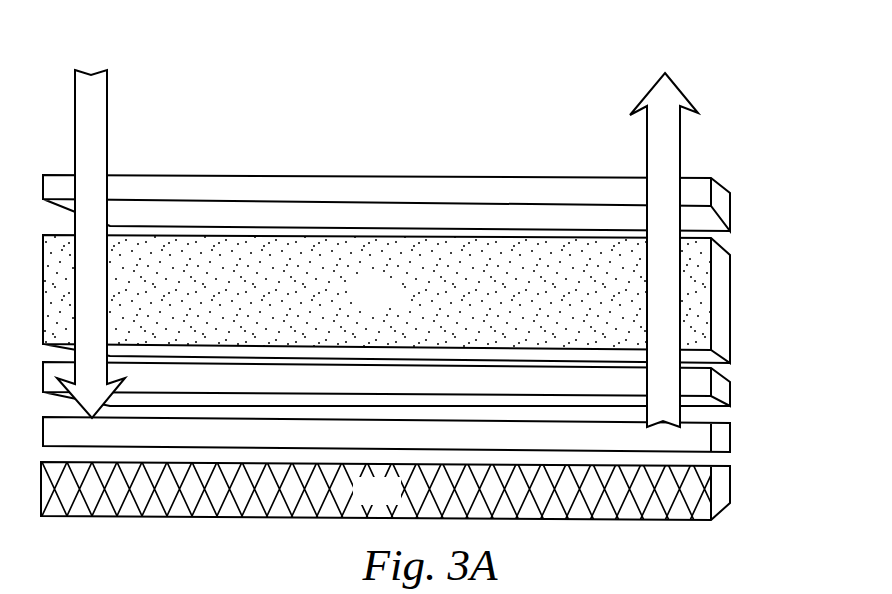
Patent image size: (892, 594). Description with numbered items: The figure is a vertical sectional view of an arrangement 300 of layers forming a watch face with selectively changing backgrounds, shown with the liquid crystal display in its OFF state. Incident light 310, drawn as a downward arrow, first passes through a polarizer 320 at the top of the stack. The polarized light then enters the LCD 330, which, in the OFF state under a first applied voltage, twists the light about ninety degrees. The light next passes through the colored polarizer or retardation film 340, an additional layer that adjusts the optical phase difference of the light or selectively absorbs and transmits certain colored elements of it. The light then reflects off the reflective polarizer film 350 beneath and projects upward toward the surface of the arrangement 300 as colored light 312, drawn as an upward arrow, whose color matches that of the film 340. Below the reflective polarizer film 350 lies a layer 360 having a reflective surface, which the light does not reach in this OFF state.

The arrangement 300 is at (429, 347).
The incident light 310 is at (91, 227).
The colored light 312 is at (664, 235).
The polarizer 320 is at (358, 201).
The LCD 330 is at (358, 303).
The colored polarizer or retardation film 340 is at (358, 390).
The reflective polarizer film 350 is at (358, 445).
The layer 360 is at (358, 502).